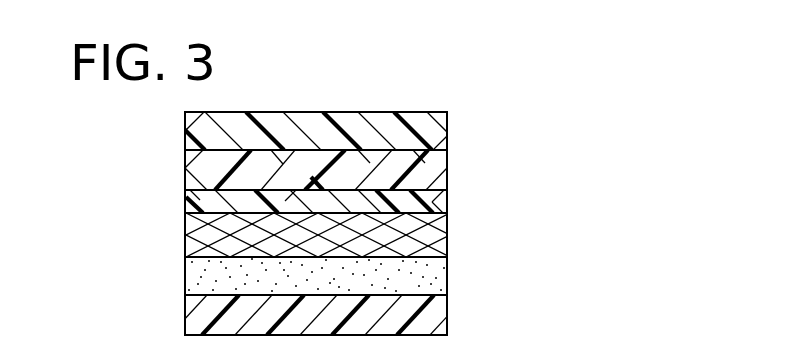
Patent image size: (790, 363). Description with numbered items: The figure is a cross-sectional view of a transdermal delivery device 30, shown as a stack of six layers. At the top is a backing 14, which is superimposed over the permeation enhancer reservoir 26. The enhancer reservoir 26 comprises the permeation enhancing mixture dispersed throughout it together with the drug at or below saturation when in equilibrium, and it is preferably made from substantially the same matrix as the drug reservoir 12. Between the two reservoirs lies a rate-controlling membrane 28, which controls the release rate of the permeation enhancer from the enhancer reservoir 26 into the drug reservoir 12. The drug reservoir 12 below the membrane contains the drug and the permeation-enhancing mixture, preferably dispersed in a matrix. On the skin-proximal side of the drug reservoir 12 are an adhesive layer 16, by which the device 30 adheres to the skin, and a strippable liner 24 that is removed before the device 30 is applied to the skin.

The transdermal delivery device 30 is at (366, 95).
The backing layer 14 is at (436, 129).
The permeation enhancer reservoir 26 is at (434, 168).
The rate-controlling membrane 28 is at (434, 203).
The drug reservoir 12 is at (428, 235).
The adhesive layer 16 is at (431, 280).
The strippable release liner 24 is at (436, 318).